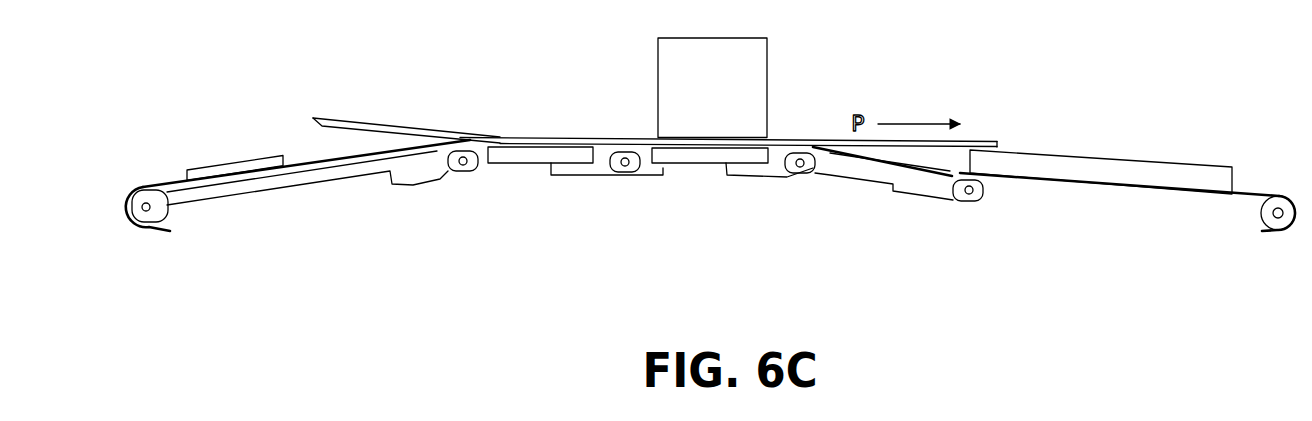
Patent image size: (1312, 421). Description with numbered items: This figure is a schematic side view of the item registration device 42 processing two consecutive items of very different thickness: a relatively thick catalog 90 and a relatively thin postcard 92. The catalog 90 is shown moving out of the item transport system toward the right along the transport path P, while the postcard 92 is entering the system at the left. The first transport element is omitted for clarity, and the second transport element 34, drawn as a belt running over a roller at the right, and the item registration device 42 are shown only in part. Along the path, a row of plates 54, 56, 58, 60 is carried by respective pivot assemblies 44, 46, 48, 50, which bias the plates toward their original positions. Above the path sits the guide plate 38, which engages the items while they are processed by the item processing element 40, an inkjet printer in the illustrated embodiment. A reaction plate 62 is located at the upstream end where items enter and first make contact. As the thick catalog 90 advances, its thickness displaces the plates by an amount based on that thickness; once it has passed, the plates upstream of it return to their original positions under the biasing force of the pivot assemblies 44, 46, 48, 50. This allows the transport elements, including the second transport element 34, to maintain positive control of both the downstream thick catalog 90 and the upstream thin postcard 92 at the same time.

The second transport element 34 is at (1250, 187).
The guide plate 38 is at (712, 140).
The item processing element 40 is at (658, 91).
The item registration device 42 is at (940, 98).
The pivot assembly 44 is at (434, 202).
The pivot assembly 46 is at (593, 207).
The pivot assembly 48 is at (773, 206).
The pivot assembly 50 is at (939, 224).
The plate 54 is at (300, 187).
The plate 56 is at (528, 170).
The plate 58 is at (700, 168).
The plate 60 is at (873, 180).
The reaction plate 62 is at (357, 123).
The catalog 90 is at (1063, 150).
The postcard 92 is at (240, 163).